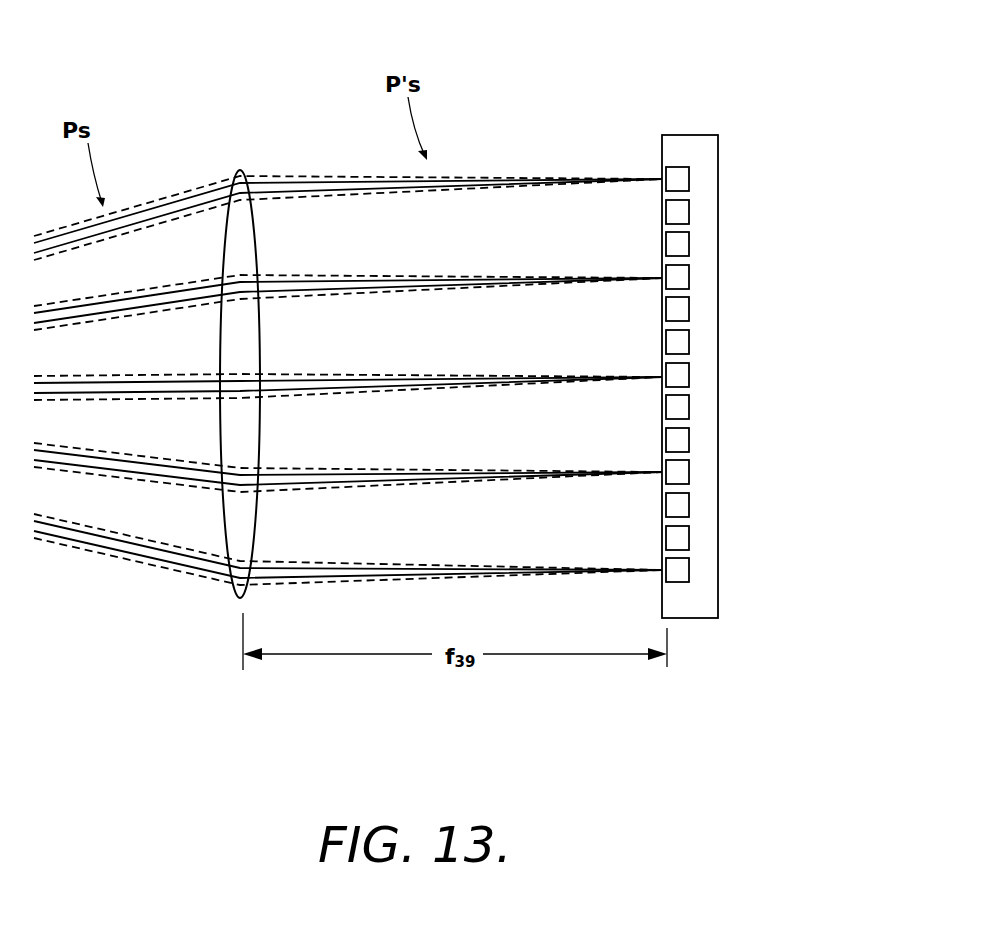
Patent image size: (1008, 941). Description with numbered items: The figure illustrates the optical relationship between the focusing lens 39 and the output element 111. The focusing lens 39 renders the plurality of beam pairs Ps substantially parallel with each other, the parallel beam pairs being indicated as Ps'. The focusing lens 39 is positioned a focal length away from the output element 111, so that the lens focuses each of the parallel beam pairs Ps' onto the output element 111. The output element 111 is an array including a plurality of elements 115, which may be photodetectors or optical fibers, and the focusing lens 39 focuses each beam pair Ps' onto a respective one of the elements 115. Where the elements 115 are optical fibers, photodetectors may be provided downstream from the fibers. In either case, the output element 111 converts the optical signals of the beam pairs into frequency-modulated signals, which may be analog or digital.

The focusing lens 39 is at (238, 170).
The output element 111 is at (676, 105).
The elements 115 is at (682, 240).